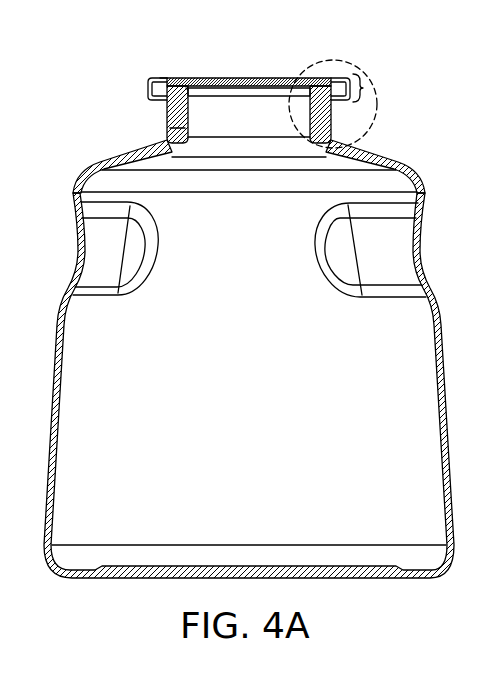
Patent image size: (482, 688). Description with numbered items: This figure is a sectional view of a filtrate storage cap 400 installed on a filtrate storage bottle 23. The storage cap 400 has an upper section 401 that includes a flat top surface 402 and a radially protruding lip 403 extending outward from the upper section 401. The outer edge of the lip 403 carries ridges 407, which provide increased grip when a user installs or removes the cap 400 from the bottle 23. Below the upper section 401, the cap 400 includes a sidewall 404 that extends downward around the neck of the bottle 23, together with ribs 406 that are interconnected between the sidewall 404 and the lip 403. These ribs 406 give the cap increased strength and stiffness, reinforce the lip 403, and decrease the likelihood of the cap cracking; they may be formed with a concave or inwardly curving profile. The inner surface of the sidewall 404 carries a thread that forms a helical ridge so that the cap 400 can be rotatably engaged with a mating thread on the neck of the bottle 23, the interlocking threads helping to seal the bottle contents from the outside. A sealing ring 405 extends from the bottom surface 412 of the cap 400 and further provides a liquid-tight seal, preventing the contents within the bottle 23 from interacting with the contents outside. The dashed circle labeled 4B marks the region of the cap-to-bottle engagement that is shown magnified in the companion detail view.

The bottle 23 is at (70, 375).
The storage cap 400 is at (258, 88).
The upper section 401 is at (361, 88).
The flat top surface 402 is at (207, 78).
The radially protruding lip 403 is at (160, 78).
The sidewall 404 is at (170, 132).
The sealing ring 405 is at (186, 88).
The ribs 406 is at (167, 104).
The ridges 407 is at (148, 91).
The bottom surface 412 is at (290, 89).
The detail view callout for FIG. 4B is at (358, 62).